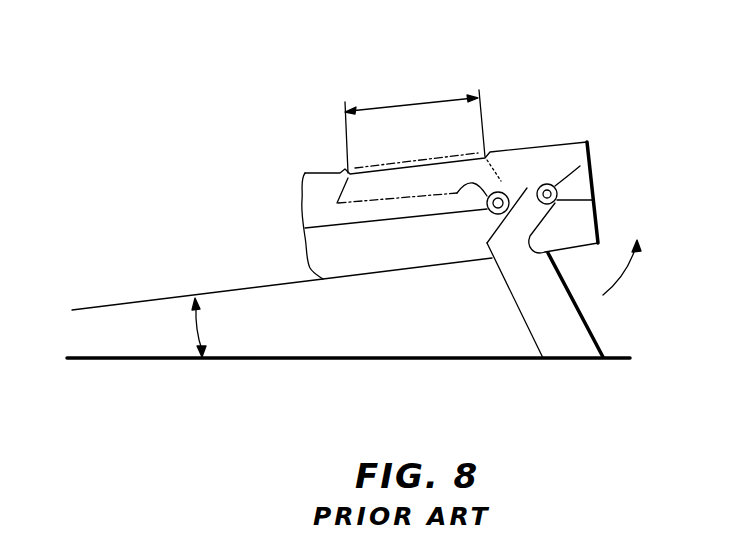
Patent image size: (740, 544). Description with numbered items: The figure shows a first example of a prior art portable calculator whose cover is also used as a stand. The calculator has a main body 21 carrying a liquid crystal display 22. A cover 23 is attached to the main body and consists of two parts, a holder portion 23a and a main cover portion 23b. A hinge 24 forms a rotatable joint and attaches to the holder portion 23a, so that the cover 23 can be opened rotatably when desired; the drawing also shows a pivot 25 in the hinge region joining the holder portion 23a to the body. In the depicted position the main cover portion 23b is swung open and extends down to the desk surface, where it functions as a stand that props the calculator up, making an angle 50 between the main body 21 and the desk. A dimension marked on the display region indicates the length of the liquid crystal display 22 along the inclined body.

The main body 21 is at (400, 274).
The liquid crystal display 22 is at (385, 167).
The cover 23 is at (469, 152).
The holder portion 23a is at (522, 225).
The main cover portion 23b is at (415, 160).
The hinge 24 is at (590, 162).
The pivot shaft 25 is at (520, 188).
The angle 50 is at (203, 328).